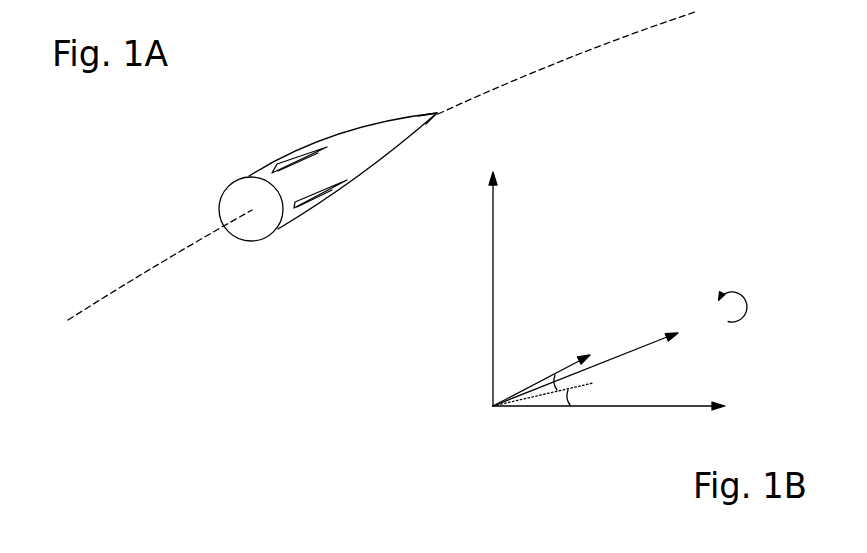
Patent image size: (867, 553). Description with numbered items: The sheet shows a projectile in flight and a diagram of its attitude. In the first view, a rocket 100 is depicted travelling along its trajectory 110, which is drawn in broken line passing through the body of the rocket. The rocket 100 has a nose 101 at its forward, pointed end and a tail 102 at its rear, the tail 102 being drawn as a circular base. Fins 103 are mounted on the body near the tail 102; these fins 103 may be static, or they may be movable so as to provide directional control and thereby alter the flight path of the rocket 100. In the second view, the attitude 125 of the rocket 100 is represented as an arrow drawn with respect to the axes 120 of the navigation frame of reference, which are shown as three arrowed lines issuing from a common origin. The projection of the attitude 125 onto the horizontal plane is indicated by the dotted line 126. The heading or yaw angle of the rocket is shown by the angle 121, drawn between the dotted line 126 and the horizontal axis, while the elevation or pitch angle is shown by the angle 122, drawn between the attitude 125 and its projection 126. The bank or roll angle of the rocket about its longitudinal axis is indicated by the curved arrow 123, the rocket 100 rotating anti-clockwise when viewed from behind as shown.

In FIG. 1A, the rocket 100 is at (357, 140).
In FIG. 1A, the nose 101 is at (423, 115).
In FIG. 1A, the tail 102 is at (257, 241).
In FIG. 1A, the fins 103 is at (278, 162).
In FIG. 1A, the trajectory 110 is at (588, 48).
In FIG. 1B, the axes 120 is at (495, 196).
In FIG. 1B, the angle 121 is at (571, 400).
In FIG. 1B, the angle 122 is at (562, 377).
In FIG. 1B, the arrow 123 is at (747, 303).
In FIG. 1B, the attitude 125 is at (577, 358).
In FIG. 1B, the dotted line 126 is at (590, 389).